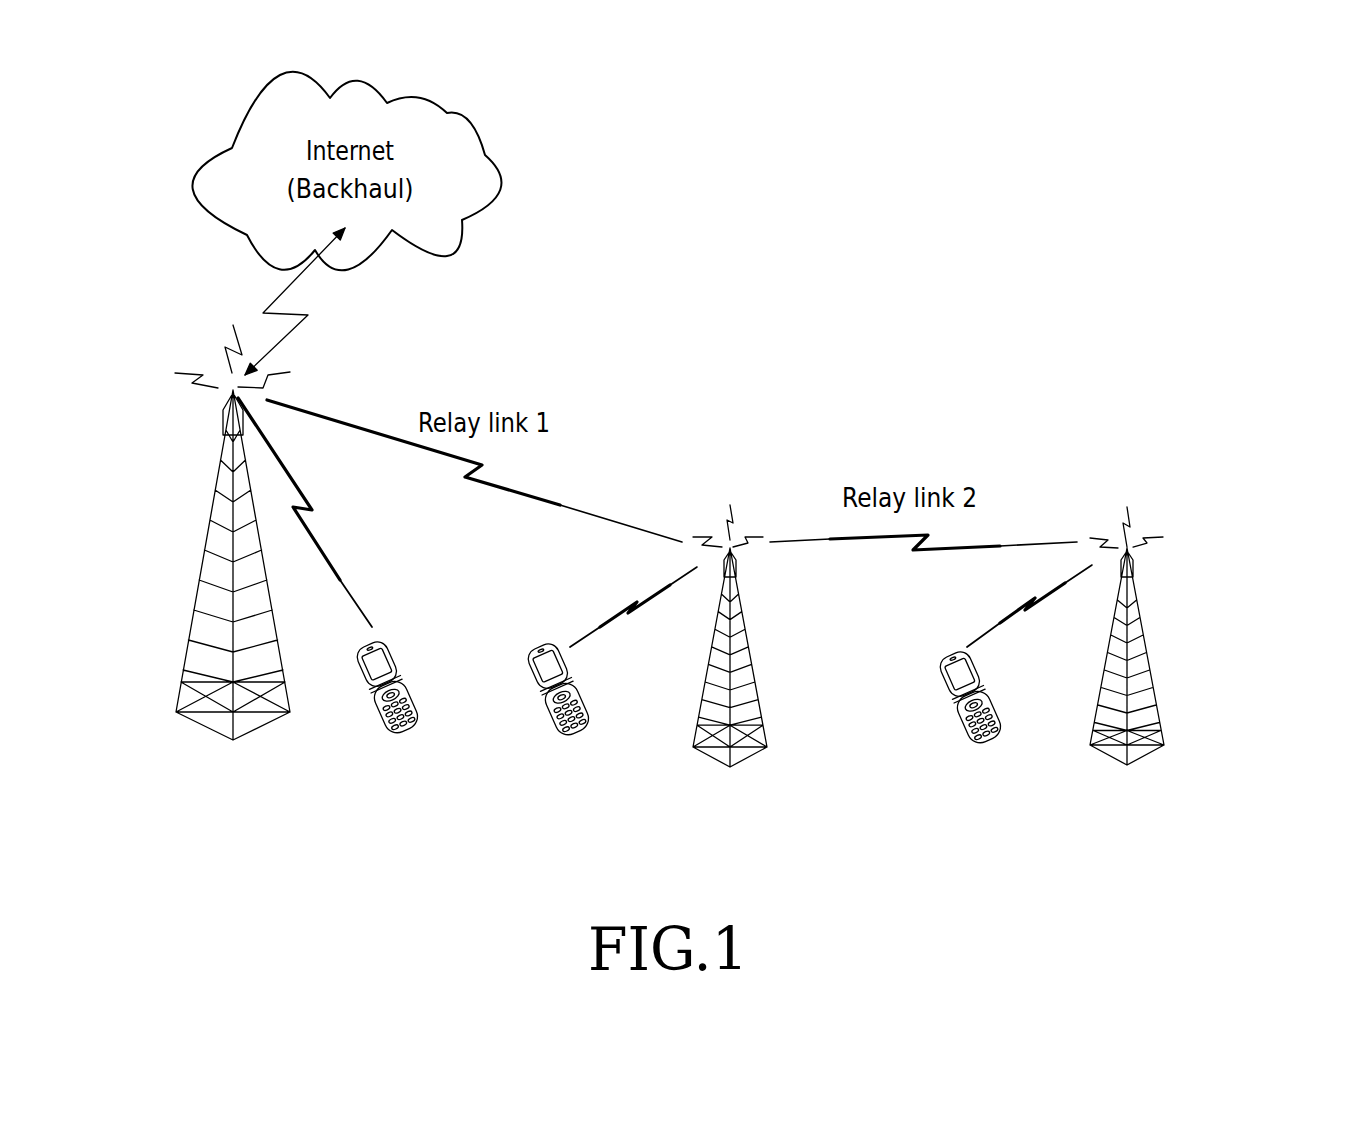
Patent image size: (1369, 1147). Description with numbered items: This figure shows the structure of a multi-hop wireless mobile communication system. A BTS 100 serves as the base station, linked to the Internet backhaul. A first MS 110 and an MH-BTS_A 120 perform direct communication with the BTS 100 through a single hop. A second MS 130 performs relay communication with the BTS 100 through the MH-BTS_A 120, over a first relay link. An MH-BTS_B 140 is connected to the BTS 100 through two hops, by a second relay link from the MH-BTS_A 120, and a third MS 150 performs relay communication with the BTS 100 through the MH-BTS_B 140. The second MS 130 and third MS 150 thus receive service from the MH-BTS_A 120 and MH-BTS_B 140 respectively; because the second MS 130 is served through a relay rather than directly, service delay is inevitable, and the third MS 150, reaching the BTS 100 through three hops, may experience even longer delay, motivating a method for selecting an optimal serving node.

The BTS 100 is at (232, 554).
The first MS 110 is at (396, 652).
The MH-BTS_A 120 is at (731, 660).
The second MS 130 is at (567, 657).
The MH-BTS_B 140 is at (1126, 662).
The third MS 150 is at (978, 664).